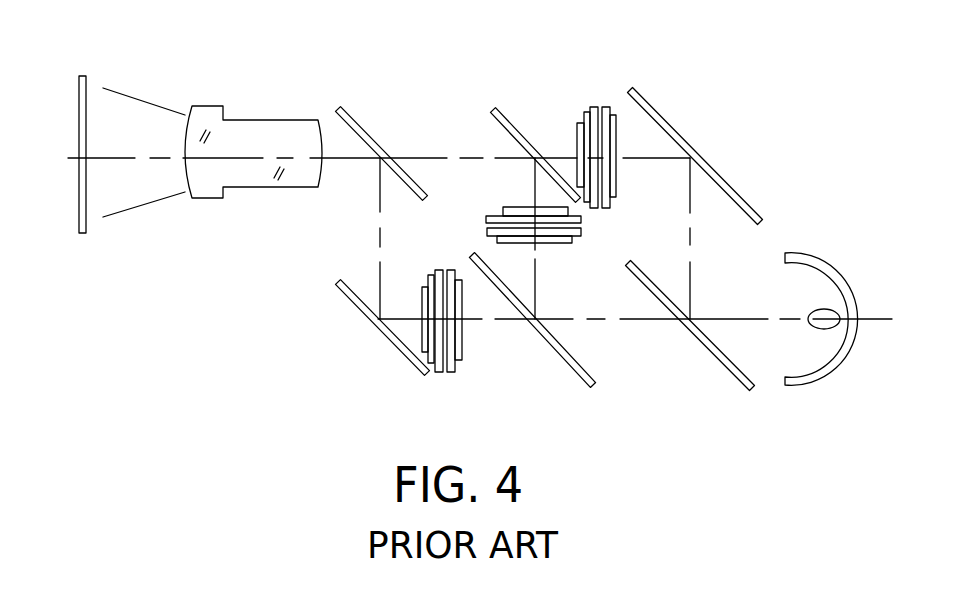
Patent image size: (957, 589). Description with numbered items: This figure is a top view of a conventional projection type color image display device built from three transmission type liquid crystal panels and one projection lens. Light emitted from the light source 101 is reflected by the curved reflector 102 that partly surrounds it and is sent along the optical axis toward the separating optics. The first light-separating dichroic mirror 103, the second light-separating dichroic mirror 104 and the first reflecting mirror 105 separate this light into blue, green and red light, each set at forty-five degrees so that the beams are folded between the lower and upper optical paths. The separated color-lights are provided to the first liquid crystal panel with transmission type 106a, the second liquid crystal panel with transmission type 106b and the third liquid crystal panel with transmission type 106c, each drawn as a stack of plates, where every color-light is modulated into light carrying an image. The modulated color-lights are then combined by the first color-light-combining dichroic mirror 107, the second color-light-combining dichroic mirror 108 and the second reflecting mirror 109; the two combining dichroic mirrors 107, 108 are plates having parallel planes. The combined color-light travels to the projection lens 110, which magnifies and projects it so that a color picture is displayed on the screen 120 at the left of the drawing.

The light source 101 is at (830, 330).
The reflector 102 is at (793, 387).
The first light-separating dichroic mirror 103 is at (730, 373).
The second light-separating dichroic mirror 104 is at (560, 357).
The first reflecting mirror 105 is at (688, 145).
The first liquid crystal panel with transmission type 106a is at (600, 100).
The second liquid crystal panel with transmission type 106b is at (483, 217).
The third liquid crystal panel with transmission type 106c is at (442, 372).
The first color-light-combining dichroic mirror 107 is at (500, 107).
The second color-light-combining dichroic mirror 108 is at (363, 132).
The second reflecting mirror 109 is at (353, 305).
The projection lens 110 is at (260, 187).
The screen 120 is at (81, 207).